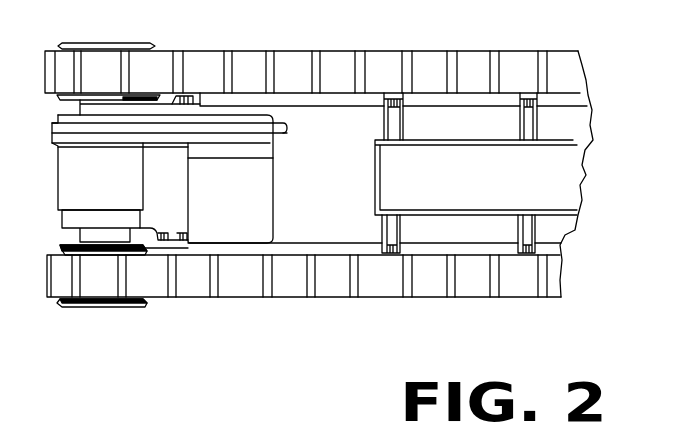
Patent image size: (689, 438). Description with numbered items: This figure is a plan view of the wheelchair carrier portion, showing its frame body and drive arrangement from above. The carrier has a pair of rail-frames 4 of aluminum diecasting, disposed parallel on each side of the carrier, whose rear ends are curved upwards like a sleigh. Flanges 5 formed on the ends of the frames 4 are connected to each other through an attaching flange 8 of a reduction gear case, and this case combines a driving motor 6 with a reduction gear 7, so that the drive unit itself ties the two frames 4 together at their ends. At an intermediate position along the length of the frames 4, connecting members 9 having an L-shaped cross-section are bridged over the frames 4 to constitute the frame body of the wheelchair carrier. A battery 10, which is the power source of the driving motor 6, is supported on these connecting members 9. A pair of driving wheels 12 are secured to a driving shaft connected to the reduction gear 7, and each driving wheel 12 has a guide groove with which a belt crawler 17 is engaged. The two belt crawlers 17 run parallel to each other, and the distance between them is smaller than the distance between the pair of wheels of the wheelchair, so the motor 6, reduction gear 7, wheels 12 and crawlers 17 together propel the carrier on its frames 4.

The rail-frame 4 is at (320, 246).
The flange 5 is at (181, 103).
The driving motor 6 is at (260, 211).
The reduction gear 7 is at (72, 190).
The attaching flange 8 is at (131, 118).
The connecting member 9 is at (385, 125).
The battery 10 is at (472, 200).
The driving wheel 12 is at (75, 44).
The belt crawler 17 is at (302, 64).